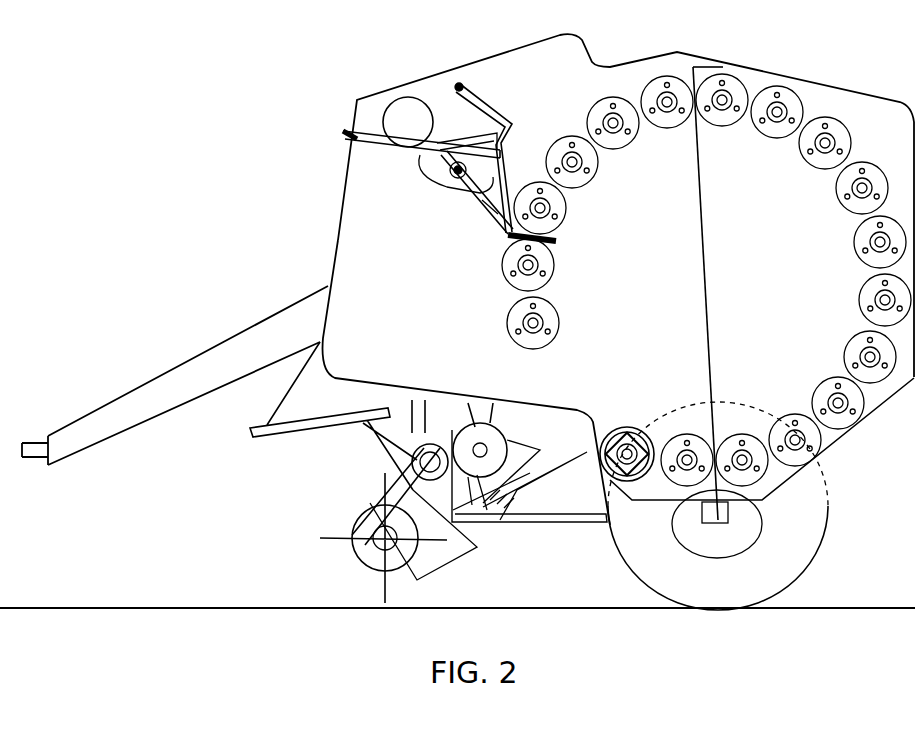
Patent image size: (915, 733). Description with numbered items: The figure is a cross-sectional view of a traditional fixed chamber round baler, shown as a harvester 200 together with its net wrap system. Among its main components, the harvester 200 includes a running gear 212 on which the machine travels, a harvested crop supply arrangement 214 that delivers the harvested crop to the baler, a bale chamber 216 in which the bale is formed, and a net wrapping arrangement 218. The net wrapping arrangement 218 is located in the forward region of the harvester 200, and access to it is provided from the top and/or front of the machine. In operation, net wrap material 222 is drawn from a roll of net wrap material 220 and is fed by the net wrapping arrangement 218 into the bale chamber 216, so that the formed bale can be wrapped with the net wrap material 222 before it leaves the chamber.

The harvester 200 is at (263, 167).
The running gear 212 is at (833, 465).
The harvested crop supply arrangement 214 is at (268, 512).
The bale chamber 216 is at (767, 258).
The net wrapping arrangement 218 is at (395, 82).
The roll of net wrap material 220 is at (377, 123).
The net wrap material 222 is at (573, 240).